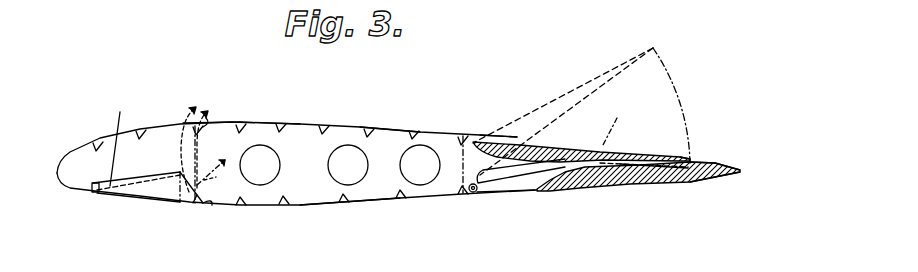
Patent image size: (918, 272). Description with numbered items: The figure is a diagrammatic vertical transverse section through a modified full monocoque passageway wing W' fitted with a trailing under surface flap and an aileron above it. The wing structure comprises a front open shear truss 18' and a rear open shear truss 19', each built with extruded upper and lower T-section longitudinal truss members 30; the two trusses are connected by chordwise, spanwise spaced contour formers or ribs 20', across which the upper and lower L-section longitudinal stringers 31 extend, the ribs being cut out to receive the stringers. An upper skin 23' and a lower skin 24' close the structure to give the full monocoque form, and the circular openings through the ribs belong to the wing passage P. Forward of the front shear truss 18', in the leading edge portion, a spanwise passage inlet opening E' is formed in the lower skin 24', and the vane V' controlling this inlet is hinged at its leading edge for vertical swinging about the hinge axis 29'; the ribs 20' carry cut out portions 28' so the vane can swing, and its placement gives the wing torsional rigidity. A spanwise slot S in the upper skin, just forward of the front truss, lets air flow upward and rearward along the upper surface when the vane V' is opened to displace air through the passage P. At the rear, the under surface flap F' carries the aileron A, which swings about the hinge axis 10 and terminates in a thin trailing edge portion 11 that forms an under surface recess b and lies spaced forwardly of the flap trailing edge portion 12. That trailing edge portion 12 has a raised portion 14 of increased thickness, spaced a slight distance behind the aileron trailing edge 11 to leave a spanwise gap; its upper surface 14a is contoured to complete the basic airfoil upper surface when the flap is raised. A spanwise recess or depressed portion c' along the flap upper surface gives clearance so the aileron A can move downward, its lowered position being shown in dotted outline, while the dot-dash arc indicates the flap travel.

The hinge axis 10 is at (514, 143).
The trailing edge portion of the aileron 11 is at (678, 156).
The trailing edge portion of the wing flap 12 is at (728, 174).
The raised portion 14 is at (694, 165).
The upper surface of raised portion 14a is at (729, 163).
The front open shear truss 18' is at (219, 100).
The rear open shear truss 19' is at (498, 109).
The contour formers or ribs 20' is at (293, 110).
The upper skin 23' is at (405, 103).
The lower skin 24' is at (350, 217).
The cut out portions 28' is at (218, 222).
The hinge axis of the vane 29' is at (95, 207).
The T-section longitudinal truss members 30 is at (198, 124).
The longitudinal stringers 31 is at (241, 123).
The aileron A is at (582, 142).
The under surface recess b is at (667, 161).
The spanwise recess or depressed portion c' is at (580, 131).
The passage inlet opening E' is at (159, 192).
The trailing under surface wing flap F' is at (638, 192).
The wing passage P is at (340, 165).
The slot S is at (184, 126).
The vane V' is at (115, 139).
The wing W' is at (297, 145).